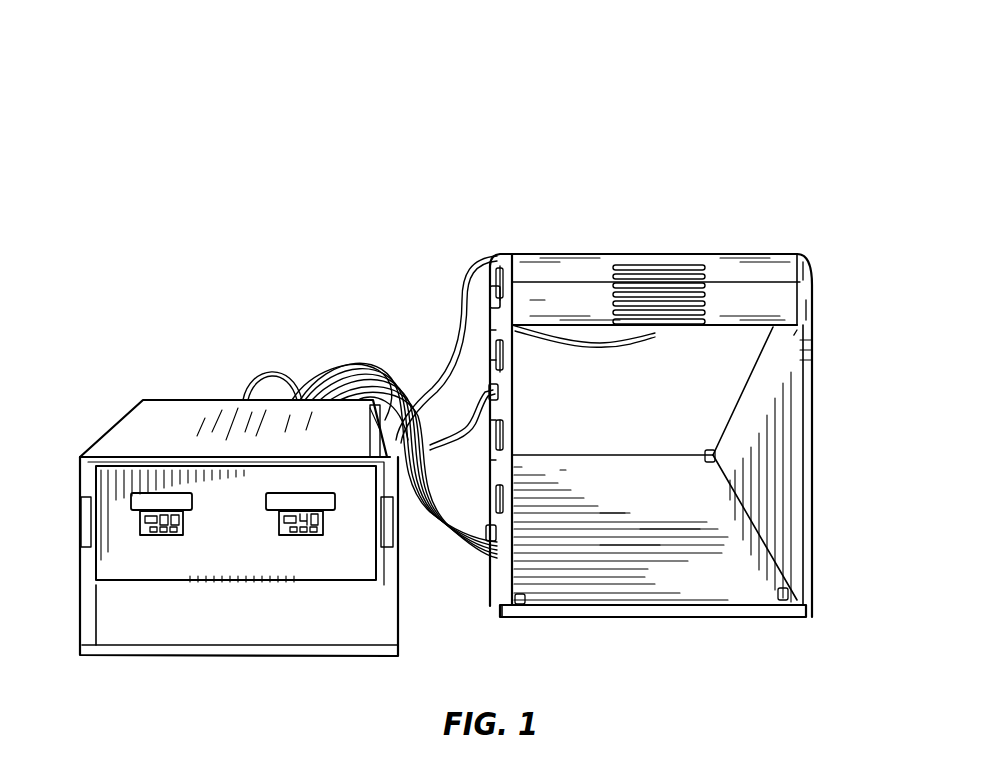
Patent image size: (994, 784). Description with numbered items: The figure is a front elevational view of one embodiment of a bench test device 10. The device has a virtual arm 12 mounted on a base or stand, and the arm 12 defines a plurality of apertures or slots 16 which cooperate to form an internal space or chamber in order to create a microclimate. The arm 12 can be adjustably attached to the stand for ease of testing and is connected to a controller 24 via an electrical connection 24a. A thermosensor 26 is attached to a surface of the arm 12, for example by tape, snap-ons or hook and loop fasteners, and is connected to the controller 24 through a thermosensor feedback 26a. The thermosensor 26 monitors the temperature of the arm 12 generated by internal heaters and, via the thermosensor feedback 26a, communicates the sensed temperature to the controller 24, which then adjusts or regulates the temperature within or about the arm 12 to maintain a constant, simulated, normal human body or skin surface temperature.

The bench test device 10 is at (640, 157).
The virtual arm 12 is at (752, 302).
The apertures or slots 16 is at (690, 273).
The controller 24 is at (160, 412).
The electrical connection 24a is at (330, 425).
The thermosensor 26 is at (531, 254).
The thermosensor feedback 26a is at (493, 297).